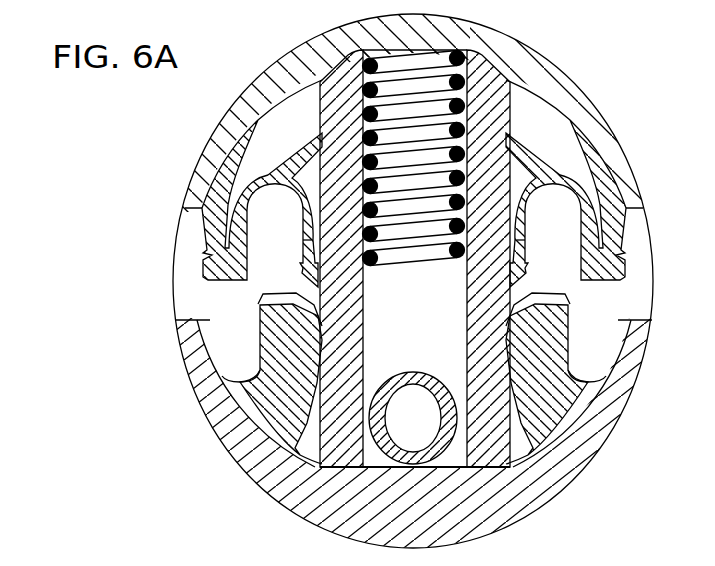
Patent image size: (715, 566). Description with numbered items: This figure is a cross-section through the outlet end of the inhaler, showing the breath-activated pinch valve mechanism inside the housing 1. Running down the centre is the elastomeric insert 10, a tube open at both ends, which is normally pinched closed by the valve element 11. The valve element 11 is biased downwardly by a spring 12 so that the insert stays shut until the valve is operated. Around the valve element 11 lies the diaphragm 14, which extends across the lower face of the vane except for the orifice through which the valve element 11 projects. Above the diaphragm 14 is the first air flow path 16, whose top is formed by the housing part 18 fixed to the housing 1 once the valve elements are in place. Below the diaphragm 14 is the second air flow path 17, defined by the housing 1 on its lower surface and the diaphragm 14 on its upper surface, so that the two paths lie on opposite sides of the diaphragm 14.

The housing 1 is at (198, 388).
The elastomeric insert 10 is at (290, 505).
The valve element 11 is at (240, 465).
The spring 12 is at (551, 62).
The diaphragm 14 is at (224, 120).
The first air flow path 16 is at (263, 80).
The second air flow path 17 is at (173, 315).
The housing part 18 is at (196, 174).